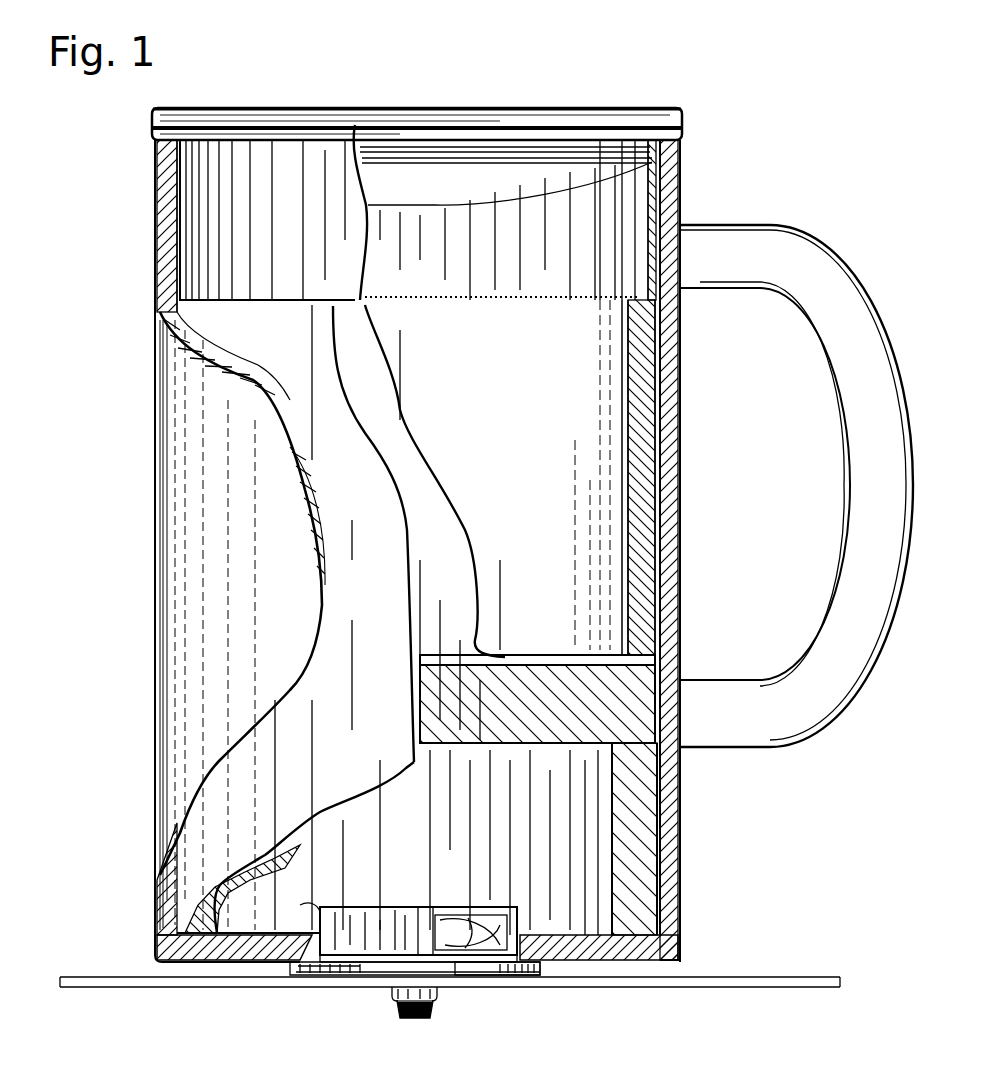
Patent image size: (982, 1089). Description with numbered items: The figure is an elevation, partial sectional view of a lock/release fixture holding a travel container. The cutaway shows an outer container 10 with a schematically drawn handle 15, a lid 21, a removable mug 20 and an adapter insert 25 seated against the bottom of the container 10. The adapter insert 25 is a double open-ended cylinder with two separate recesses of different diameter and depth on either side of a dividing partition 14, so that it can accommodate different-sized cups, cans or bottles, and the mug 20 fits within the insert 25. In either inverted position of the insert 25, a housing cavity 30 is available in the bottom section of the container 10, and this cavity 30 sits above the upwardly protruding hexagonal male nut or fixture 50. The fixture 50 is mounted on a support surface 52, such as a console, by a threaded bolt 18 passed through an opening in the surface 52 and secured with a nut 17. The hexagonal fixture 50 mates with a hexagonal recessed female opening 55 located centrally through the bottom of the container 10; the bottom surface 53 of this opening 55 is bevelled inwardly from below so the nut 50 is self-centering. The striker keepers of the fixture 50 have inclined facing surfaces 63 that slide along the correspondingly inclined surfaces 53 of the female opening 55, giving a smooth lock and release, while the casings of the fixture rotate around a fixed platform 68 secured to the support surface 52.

The outer container 10 is at (213, 416).
The dividing partition 14 is at (498, 692).
The handle 15 is at (825, 672).
The nut 17 is at (438, 990).
The threaded bolt 18 is at (414, 1018).
The removable mug 20 is at (232, 222).
The lid 21 is at (152, 118).
The adapter insert 25 is at (268, 785).
The housing cavity 30 is at (540, 838).
The fixture 50 is at (402, 907).
The support surface 52 is at (750, 977).
The bottom surface 53 is at (520, 975).
The female opening 55 is at (368, 964).
The inclined facing surfaces 63 is at (505, 920).
The fixed platform 68 is at (302, 974).